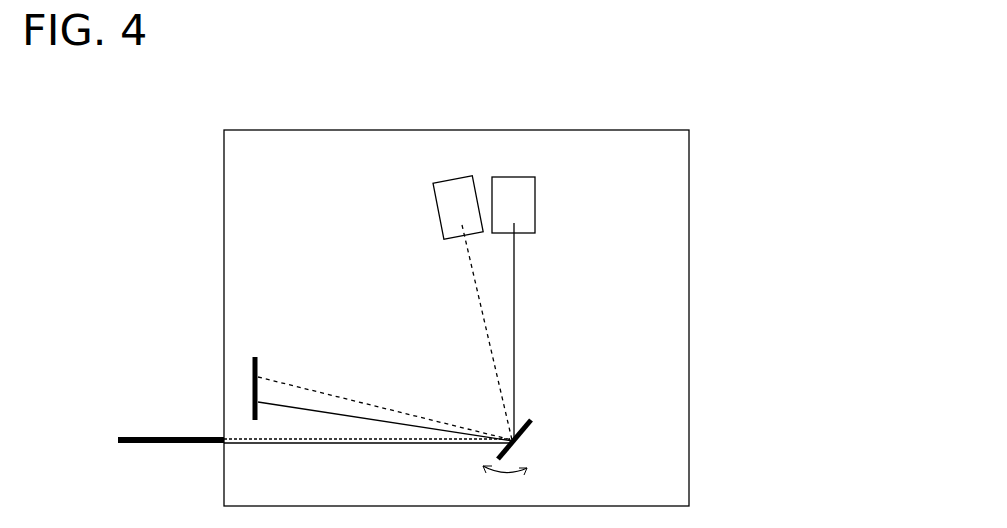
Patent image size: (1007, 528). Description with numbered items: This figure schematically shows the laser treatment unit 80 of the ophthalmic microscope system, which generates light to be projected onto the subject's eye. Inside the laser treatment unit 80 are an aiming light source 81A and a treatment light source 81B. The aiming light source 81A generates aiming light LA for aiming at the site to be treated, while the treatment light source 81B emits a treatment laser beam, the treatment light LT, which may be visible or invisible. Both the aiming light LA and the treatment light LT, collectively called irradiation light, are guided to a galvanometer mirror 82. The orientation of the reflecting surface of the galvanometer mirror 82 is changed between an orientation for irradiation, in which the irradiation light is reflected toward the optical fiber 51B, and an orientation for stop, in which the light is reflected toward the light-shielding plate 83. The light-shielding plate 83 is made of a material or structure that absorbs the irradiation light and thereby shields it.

The laser treatment unit 80 is at (689, 160).
The aiming light source 81A is at (432, 200).
The treatment light source 81B is at (535, 198).
The aiming light LA is at (476, 288).
The treatment light LT is at (516, 295).
The galvanometer mirror 82 is at (530, 434).
The light-shielding plate 83 is at (256, 357).
The optical fiber 51B is at (158, 437).